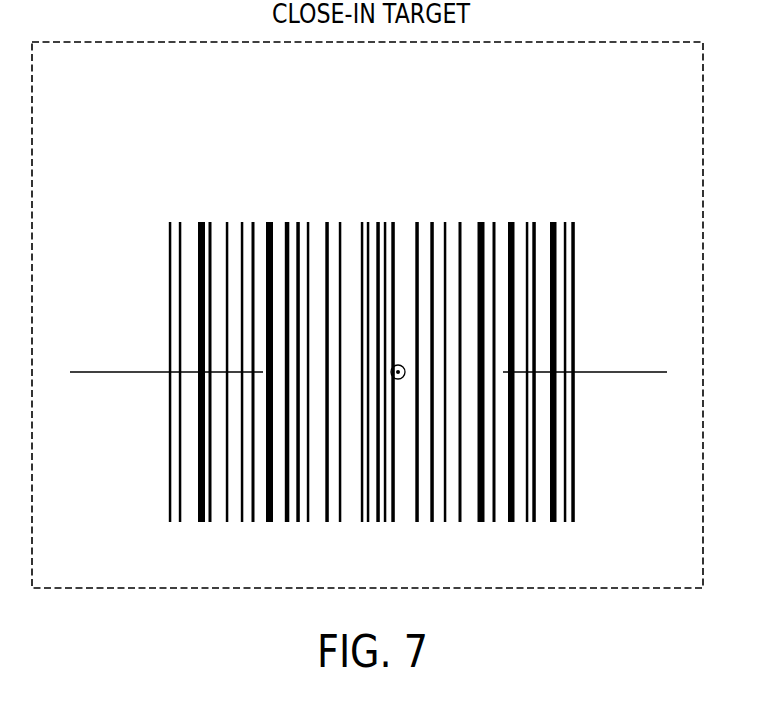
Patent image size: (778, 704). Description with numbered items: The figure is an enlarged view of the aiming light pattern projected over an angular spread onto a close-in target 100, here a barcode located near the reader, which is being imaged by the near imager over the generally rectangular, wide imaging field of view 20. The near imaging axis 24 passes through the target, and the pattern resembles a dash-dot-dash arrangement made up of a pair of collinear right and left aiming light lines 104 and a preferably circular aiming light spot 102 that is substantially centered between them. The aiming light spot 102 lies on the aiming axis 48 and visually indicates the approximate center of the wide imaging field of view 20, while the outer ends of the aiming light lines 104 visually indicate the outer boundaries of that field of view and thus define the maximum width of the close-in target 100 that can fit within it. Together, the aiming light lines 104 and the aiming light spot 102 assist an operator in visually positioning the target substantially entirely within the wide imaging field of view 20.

The close-in target 100 is at (367, 315).
The wide imaging field of view 20 is at (32, 397).
The near imaging axis 24 is at (372, 370).
The aiming light lines 104 is at (80, 372).
The aiming light spot 102 is at (403, 367).
The aiming axis 48 is at (402, 375).